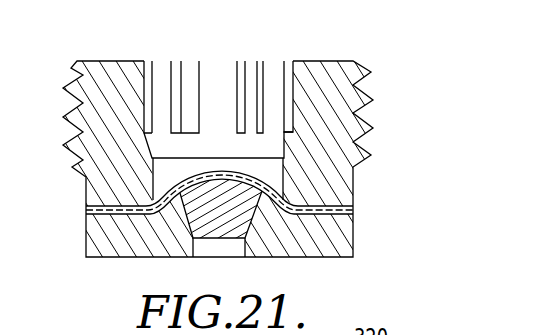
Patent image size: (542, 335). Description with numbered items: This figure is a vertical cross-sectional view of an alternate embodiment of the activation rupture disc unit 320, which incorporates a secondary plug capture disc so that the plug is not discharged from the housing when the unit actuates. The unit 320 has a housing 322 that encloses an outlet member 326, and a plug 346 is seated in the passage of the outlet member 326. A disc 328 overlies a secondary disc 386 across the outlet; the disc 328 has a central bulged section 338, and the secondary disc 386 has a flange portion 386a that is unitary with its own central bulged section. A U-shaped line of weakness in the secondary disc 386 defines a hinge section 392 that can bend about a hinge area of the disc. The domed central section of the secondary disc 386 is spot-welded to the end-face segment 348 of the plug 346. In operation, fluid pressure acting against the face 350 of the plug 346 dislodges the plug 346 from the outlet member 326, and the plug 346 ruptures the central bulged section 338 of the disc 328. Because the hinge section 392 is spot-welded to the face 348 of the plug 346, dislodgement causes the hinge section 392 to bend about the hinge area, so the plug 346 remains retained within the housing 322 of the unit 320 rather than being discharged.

The activation rupture disc unit 320 is at (329, 45).
The housing 322 is at (113, 60).
The outlet member 326 is at (120, 250).
The disc 328 is at (334, 205).
The central bulged section 338 is at (150, 162).
The plug 346 is at (225, 224).
The end-face segment 348 is at (230, 166).
The face 350 is at (197, 240).
The secondary disc 386 is at (72, 218).
The flange portion 386a is at (322, 215).
The hinge section 392 is at (200, 166).